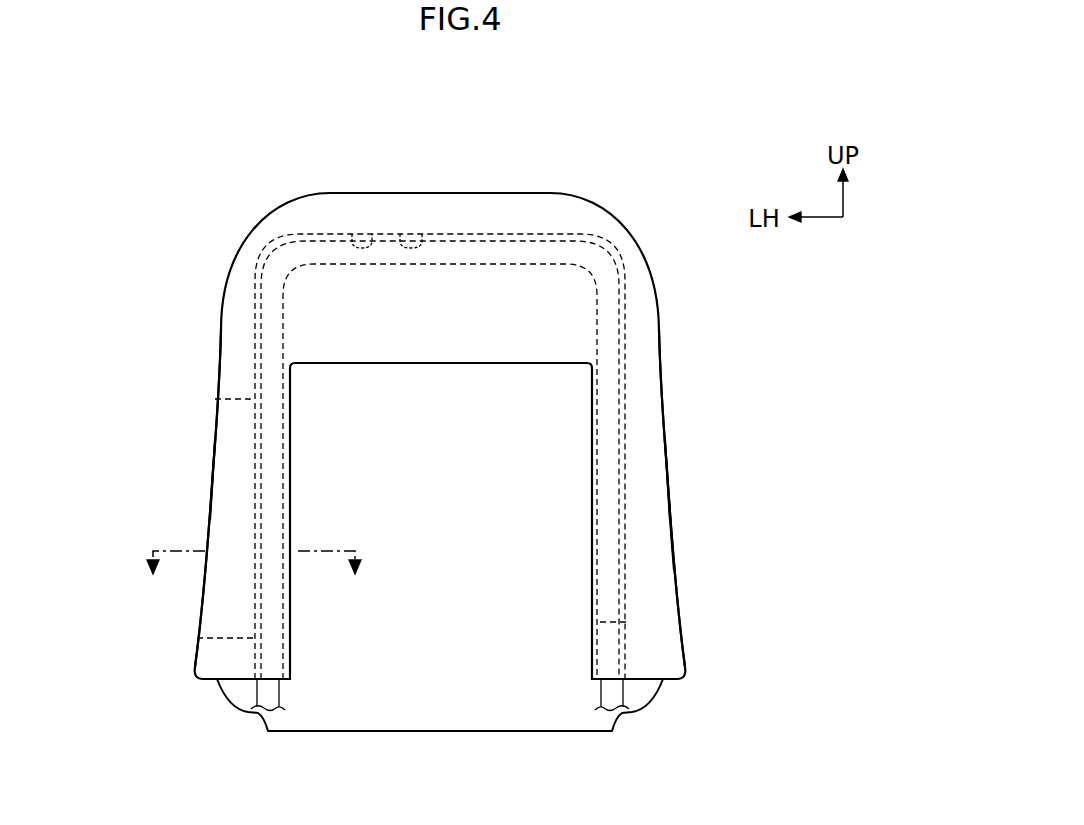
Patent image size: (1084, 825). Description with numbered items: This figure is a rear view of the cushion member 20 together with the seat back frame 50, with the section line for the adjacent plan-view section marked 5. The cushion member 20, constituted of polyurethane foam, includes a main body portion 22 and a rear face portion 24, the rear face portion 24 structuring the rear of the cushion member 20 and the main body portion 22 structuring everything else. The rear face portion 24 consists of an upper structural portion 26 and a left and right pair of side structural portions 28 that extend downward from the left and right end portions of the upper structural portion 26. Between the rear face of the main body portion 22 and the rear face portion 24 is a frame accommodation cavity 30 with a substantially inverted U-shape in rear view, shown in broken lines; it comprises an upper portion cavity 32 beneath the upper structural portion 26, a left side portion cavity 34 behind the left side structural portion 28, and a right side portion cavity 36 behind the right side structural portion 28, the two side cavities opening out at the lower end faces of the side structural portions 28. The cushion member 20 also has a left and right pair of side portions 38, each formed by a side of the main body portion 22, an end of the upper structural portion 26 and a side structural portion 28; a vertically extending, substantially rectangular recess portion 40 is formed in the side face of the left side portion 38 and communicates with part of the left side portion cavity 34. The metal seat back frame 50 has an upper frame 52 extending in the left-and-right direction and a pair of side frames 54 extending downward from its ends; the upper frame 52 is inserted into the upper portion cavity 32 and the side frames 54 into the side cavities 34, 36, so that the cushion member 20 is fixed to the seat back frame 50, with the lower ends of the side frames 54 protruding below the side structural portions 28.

The section line of FIG. 5 is at (250, 580).
The cushion member 20 is at (649, 215).
The main body portion 22 is at (465, 722).
The rear face portion 24 is at (658, 516).
The upper structural portion 26 is at (450, 215).
The side structural portions 28 is at (230, 378).
The frame accommodation cavity 30 is at (352, 236).
The upper portion cavity 32 is at (401, 236).
The left side portion cavity 34 is at (250, 622).
The right side portion cavity 36 is at (602, 622).
The side portions 38 is at (237, 456).
The recess portion 40 is at (246, 400).
The seat back frame 50 is at (496, 248).
The upper frame 52 is at (543, 248).
The side frames 54 is at (270, 697).